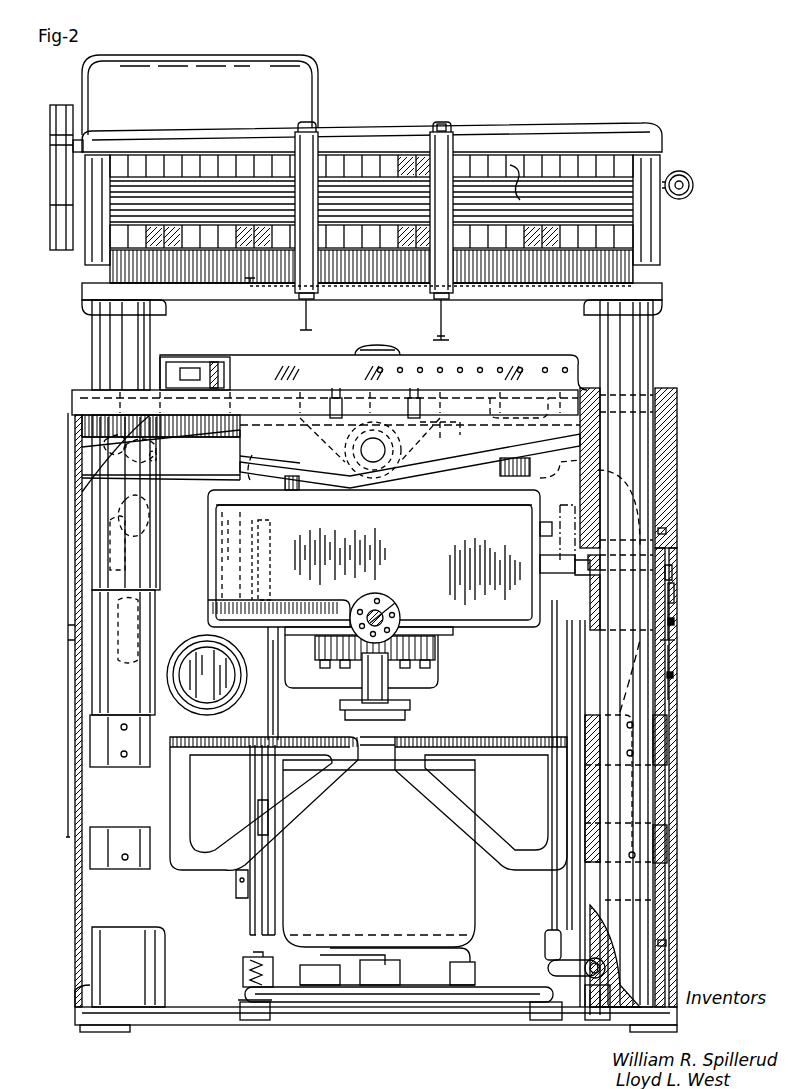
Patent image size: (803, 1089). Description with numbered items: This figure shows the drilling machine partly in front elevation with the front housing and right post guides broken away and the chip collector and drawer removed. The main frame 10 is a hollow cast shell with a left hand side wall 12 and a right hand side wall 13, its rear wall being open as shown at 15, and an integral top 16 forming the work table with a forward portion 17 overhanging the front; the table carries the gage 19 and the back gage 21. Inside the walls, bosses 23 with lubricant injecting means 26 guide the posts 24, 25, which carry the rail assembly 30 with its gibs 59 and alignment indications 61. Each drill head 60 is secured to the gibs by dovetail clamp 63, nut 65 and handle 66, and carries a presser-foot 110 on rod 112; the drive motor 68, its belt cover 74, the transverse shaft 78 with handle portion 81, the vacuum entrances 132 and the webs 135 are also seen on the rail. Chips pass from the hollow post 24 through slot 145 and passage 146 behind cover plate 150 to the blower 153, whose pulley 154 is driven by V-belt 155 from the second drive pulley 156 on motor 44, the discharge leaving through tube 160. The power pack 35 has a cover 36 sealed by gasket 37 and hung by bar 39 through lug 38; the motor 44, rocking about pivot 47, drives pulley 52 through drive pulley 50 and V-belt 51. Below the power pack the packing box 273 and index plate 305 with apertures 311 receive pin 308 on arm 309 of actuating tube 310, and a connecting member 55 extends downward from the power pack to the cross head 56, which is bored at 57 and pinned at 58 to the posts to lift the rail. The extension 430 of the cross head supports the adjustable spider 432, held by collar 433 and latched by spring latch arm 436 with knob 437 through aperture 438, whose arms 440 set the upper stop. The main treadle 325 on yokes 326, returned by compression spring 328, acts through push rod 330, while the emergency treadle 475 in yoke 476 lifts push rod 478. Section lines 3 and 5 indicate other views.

The section line 3- 3 is at (710, 387).
The section line 5- 5 is at (440, 90).
The main frame 10 is at (370, 695).
The left hand side wall 12 is at (75, 495).
The right hand side wall 13 is at (676, 700).
The open portion of rear wall 15 is at (675, 560).
The top 16 is at (92, 390).
The forward portion of top 17 is at (72, 402).
The gage 19 is at (228, 358).
The back gage 21 is at (272, 362).
The bosses 23 is at (668, 462).
The guide post 24 is at (92, 333).
The guide post 25 is at (650, 335).
The lubricant injecting means 26 is at (677, 532).
The rail assembly 30 is at (513, 128).
The power pack 35 is at (502, 639).
The removable cover 36 is at (215, 505).
The gasket 37 is at (473, 505).
The upstanding lug 38 is at (410, 457).
The bar 39 is at (362, 452).
The drive motor 44 is at (465, 882).
The pivot 47 is at (480, 985).
The drive pulley 50 is at (265, 936).
The V-belt 51 is at (278, 698).
The pulley 52 is at (262, 526).
The drive shaft 55 is at (387, 672).
The cross head 56 is at (493, 737).
The bores of cross head arms 57 is at (660, 748).
The pins 58 is at (121, 754).
The gibs 59 is at (590, 158).
The drill head 60 is at (329, 304).
The parallel indications 61 is at (556, 230).
The dovetail clamp 63 is at (297, 150).
The nut 65 is at (305, 132).
The handle 66 is at (437, 128).
The drive motor 68 is at (319, 78).
The cover 74 is at (62, 108).
The transverse shaft 78 is at (578, 188).
The handle portion 81 is at (694, 186).
The presser-foot 110 is at (300, 328).
The rod 112 is at (447, 322).
The restricted entrances 132 is at (385, 286).
The webs 135 is at (250, 288).
The vertical slot 145 is at (85, 447).
The passage 146 is at (85, 476).
The cover plate 150 is at (72, 588).
The blower 153 is at (225, 815).
The drive pulley 154 is at (262, 768).
The V-belt 155 is at (250, 800).
The second drive pulley 156 is at (250, 922).
The tube 160 is at (237, 660).
The packing box 273 is at (432, 645).
The index plate 305 is at (365, 645).
The pin 308 is at (381, 608).
The arm 309 is at (366, 610).
The actuating tube 310 is at (390, 612).
The apertures 311 is at (398, 626).
The main actuating treadle 325 is at (342, 1002).
The yokes 326 is at (252, 1020).
The compression spring 328 is at (243, 970).
The push rod 330 is at (555, 688).
The upwardly extending portion 430 is at (668, 655).
The adjustable spider 432 is at (675, 600).
The collar 433 is at (675, 572).
The spring latch arm 436 is at (672, 640).
The operating knob 437 is at (678, 622).
The aperture 438 is at (673, 680).
The arms 440 is at (672, 586).
The emergency treadle 475 is at (606, 968).
The yoke 476 is at (592, 1020).
The push rod 478 is at (552, 910).